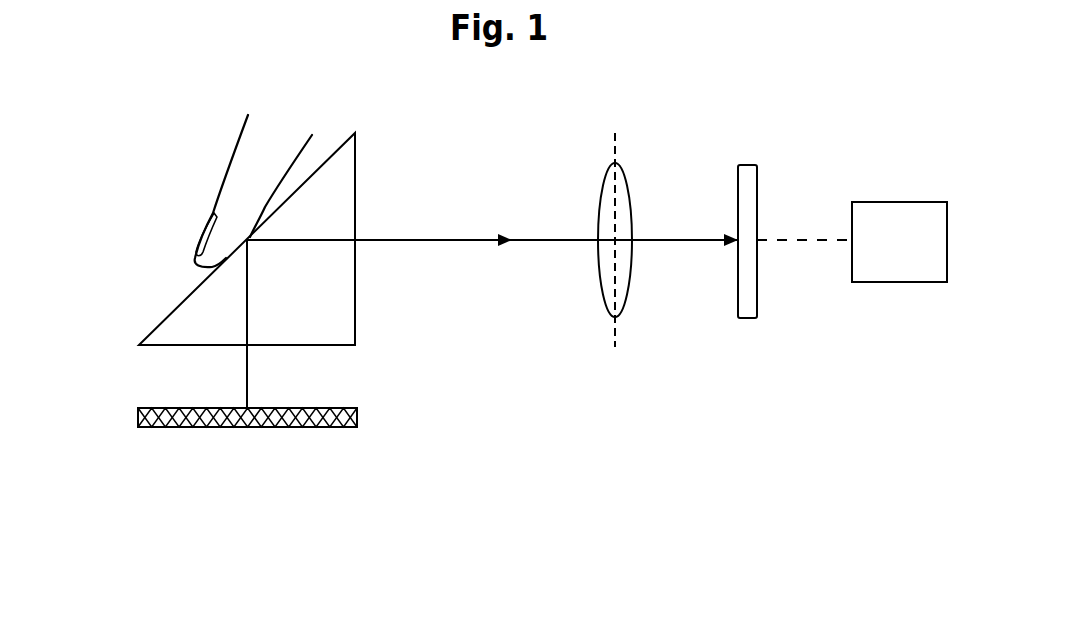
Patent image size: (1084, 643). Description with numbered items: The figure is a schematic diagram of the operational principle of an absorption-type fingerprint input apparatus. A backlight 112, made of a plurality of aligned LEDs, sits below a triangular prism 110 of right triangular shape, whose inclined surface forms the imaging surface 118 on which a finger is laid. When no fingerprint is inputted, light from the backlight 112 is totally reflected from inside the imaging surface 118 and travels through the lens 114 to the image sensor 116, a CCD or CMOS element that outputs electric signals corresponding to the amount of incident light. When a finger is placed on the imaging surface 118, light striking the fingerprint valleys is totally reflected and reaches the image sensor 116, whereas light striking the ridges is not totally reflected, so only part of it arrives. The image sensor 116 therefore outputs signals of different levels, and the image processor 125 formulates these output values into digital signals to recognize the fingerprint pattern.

The triangular prism 110 is at (345, 197).
The backlight 112 is at (293, 429).
The lens 114 is at (620, 192).
The image sensor 116 is at (750, 175).
The imaging surface 118 is at (168, 319).
The image processor 125 is at (903, 215).